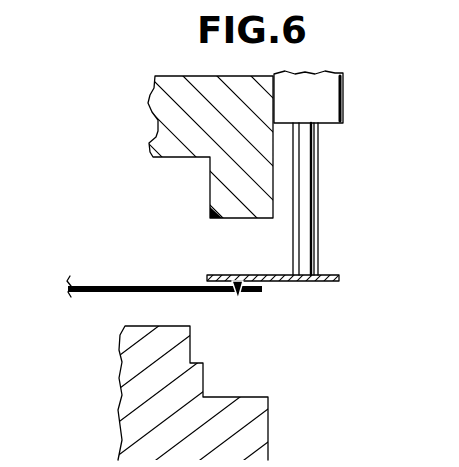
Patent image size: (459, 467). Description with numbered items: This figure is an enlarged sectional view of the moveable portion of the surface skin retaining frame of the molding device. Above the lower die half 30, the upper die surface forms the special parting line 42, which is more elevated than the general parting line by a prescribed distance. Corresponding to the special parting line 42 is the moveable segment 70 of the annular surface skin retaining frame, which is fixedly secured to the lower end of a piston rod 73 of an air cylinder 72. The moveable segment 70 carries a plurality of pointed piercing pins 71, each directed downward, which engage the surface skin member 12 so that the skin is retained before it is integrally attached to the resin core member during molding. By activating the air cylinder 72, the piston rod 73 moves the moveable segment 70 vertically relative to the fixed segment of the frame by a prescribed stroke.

The surface skin member 12 is at (90, 293).
The lower die half 30 is at (263, 428).
The special parting line 42 is at (224, 219).
The moveable segment 70 is at (330, 273).
The pointed piercing pins 71 is at (238, 298).
The air cylinder 72 is at (335, 103).
The piston rod 73 is at (319, 167).